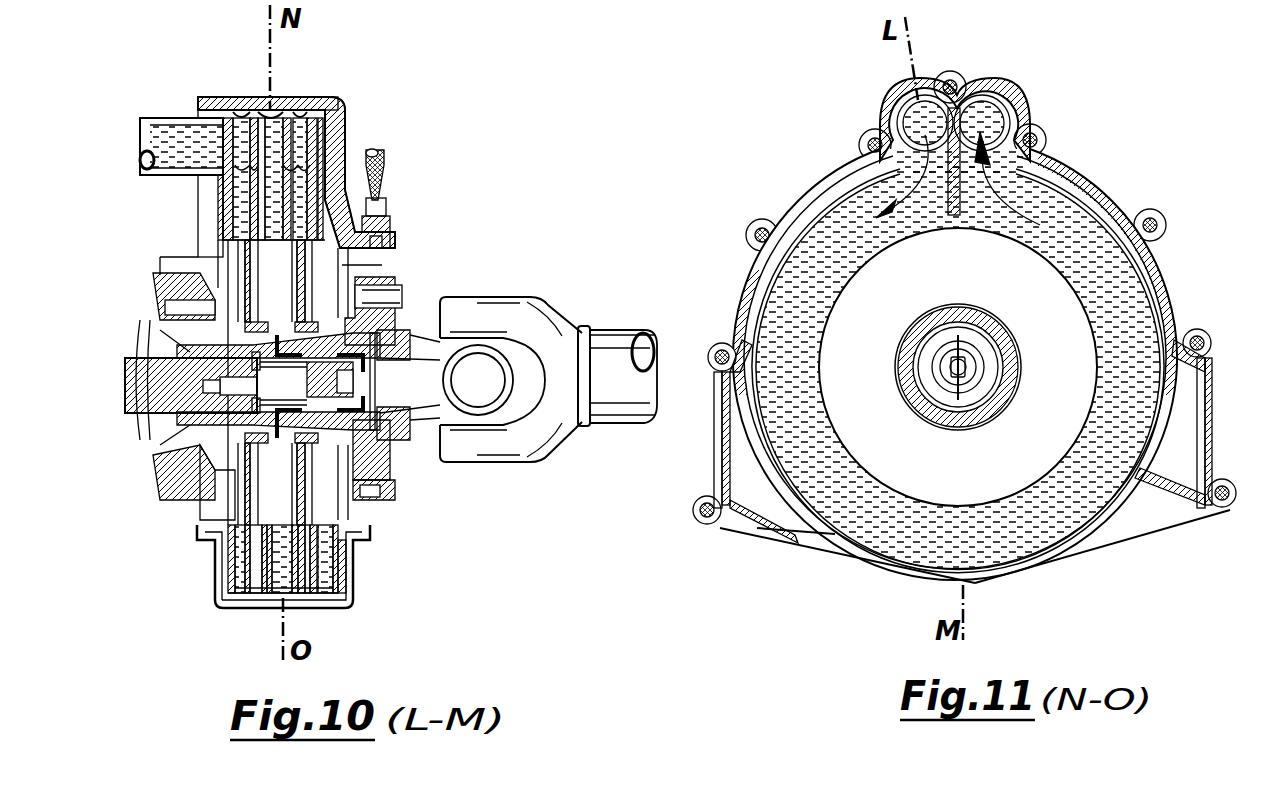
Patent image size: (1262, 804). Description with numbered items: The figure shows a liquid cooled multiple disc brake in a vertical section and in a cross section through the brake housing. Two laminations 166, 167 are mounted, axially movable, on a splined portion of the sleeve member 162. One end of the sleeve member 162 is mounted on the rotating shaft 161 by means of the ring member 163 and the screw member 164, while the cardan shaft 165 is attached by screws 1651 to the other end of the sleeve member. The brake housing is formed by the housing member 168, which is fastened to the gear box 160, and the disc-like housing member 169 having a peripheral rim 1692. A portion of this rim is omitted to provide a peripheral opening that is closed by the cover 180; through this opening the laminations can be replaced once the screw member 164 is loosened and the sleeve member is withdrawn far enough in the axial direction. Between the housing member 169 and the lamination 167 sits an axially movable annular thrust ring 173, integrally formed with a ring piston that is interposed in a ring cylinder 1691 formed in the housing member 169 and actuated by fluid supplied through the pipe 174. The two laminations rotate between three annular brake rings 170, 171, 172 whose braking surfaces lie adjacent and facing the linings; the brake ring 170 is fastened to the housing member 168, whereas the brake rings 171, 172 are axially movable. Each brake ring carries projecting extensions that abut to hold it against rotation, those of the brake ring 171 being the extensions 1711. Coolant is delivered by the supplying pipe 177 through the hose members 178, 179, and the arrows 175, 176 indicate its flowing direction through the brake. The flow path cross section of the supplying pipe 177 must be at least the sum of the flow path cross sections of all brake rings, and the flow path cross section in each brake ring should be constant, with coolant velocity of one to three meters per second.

In FIG. 10, the gear box 160 is at (153, 287).
In FIG. 10, the rotating shaft 161 is at (142, 420).
In FIG. 10, the sleeve member 162 is at (210, 467).
In FIG. 11, the sleeve member 162 is at (995, 400).
In FIG. 10, the ring member 163 is at (390, 485).
In FIG. 11, the ring member 163 is at (990, 358).
In FIG. 10, the screw member 164 is at (372, 445).
In FIG. 11, the screw member 164 is at (945, 390).
In FIG. 10, the cardan shaft 165 is at (560, 380).
In FIG. 10, the screws 1651 is at (407, 290).
In FIG. 10, the lamination 166 is at (213, 523).
In FIG. 11, the lamination 166 is at (1020, 270).
In FIG. 10, the lamination 167 is at (367, 533).
In FIG. 10, the housing member 168 is at (222, 218).
In FIG. 10, the disc-like housing member 169 is at (332, 100).
In FIG. 11, the disc-like housing member 169 is at (747, 267).
In FIG. 10, the ring cylinder 1691 is at (378, 253).
In FIG. 10, the peripheral rim 1692 is at (258, 100).
In FIG. 10, the brake ring 170 is at (233, 605).
In FIG. 10, the brake ring 171 is at (293, 595).
In FIG. 11, the brake ring 171 is at (832, 532).
In FIG. 11, the projecting extensions 1711 is at (1230, 318).
In FIG. 10, the brake ring 172 is at (340, 605).
In FIG. 10, the annular thrust ring 173 is at (360, 137).
In FIG. 10, the pipe 174 is at (385, 167).
In FIG. 11, the arrow 175 is at (910, 187).
In FIG. 11, the arrow 176 is at (1020, 265).
In FIG. 10, the supplying pipe 177 is at (165, 140).
In FIG. 10, the hose member 178 is at (247, 112).
In FIG. 10, the hose member 179 is at (285, 112).
In FIG. 10, the cover 180 is at (263, 603).
In FIG. 11, the cover 180 is at (1115, 545).